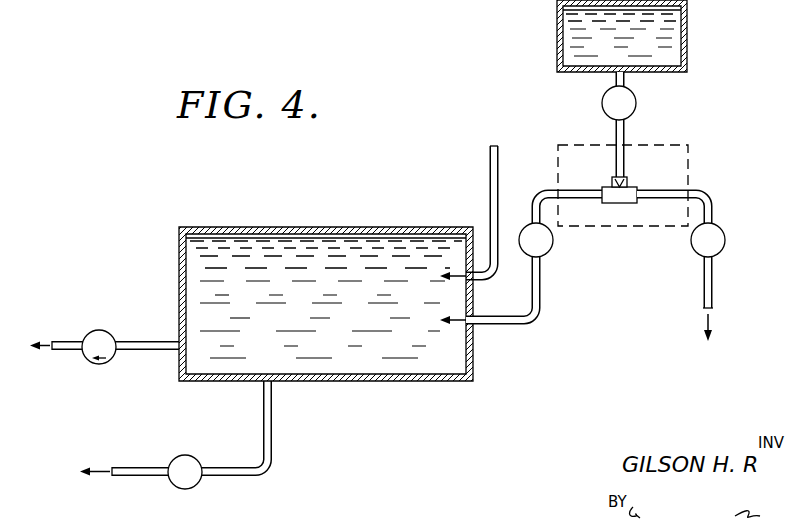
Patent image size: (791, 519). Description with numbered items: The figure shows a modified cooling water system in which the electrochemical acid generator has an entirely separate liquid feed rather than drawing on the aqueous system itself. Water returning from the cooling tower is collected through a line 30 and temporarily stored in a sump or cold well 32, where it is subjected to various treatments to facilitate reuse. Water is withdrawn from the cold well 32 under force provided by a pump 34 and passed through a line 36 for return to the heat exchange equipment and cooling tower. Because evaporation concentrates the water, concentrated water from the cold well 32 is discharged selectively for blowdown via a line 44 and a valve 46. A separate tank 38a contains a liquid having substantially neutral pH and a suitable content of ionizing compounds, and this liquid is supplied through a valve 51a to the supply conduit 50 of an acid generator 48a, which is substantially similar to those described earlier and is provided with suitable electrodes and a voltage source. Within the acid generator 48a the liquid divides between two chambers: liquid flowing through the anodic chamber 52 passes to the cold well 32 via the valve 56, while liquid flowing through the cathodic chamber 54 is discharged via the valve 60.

The line 30 is at (490, 152).
The cold well 32 is at (473, 355).
The pump 34 is at (100, 330).
The line 36 is at (64, 350).
The separate tank 38a is at (687, 35).
The line 44 is at (272, 421).
The valve 46 is at (196, 458).
The acid generator 48a is at (700, 143).
The supply conduit 50 is at (627, 162).
The valve 51a is at (636, 106).
The anodic chamber 52 is at (587, 190).
The cathodic chamber 54 is at (683, 190).
The valve 56 is at (549, 247).
The valve 60 is at (725, 238).